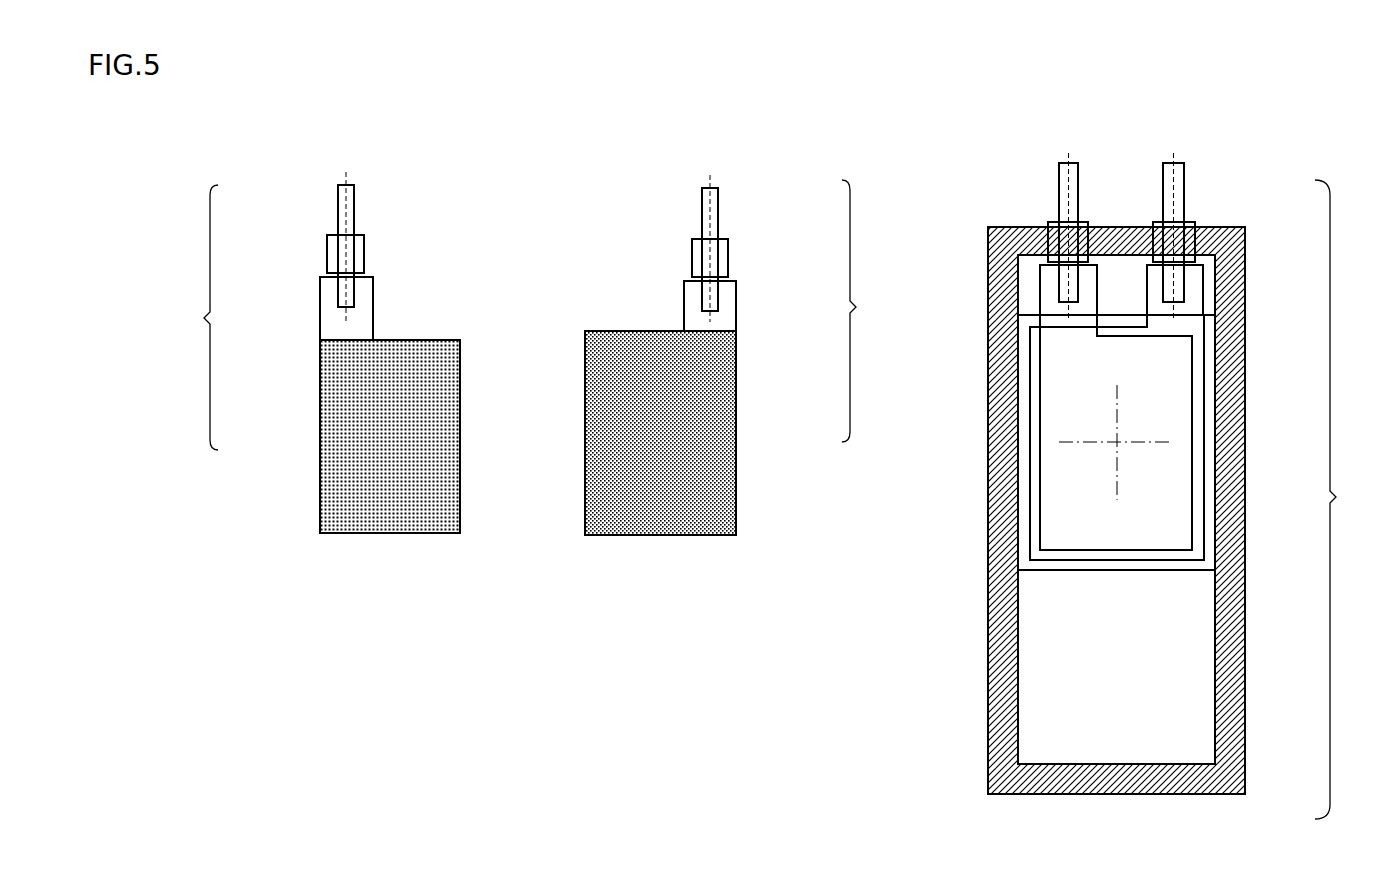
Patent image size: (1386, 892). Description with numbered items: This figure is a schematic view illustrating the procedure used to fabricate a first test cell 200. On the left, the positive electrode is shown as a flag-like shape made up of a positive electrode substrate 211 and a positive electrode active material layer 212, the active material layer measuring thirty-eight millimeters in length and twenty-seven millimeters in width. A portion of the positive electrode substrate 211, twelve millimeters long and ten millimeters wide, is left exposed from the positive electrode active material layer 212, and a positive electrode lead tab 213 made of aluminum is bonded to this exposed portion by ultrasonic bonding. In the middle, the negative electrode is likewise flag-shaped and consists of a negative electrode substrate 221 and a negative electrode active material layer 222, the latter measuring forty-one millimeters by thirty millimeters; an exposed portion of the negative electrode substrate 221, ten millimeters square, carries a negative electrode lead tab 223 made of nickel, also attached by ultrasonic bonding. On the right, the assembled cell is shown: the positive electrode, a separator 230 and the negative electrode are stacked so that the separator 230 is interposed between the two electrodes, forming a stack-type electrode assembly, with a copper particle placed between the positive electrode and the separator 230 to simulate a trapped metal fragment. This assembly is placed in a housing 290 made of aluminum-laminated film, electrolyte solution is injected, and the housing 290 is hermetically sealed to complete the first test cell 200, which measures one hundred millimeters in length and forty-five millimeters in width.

The first test cell 200 is at (1185, 486).
The positive electrode substrate 211 is at (320, 306).
The positive electrode active material layer 212 is at (324, 424).
The positive electrode lead tab 213 is at (342, 206).
The negative electrode substrate 221 is at (731, 305).
The negative electrode active material layer 222 is at (736, 420).
The negative electrode lead tab 223 is at (714, 209).
The separator 230 is at (1195, 612).
The housing 290 is at (1238, 736).